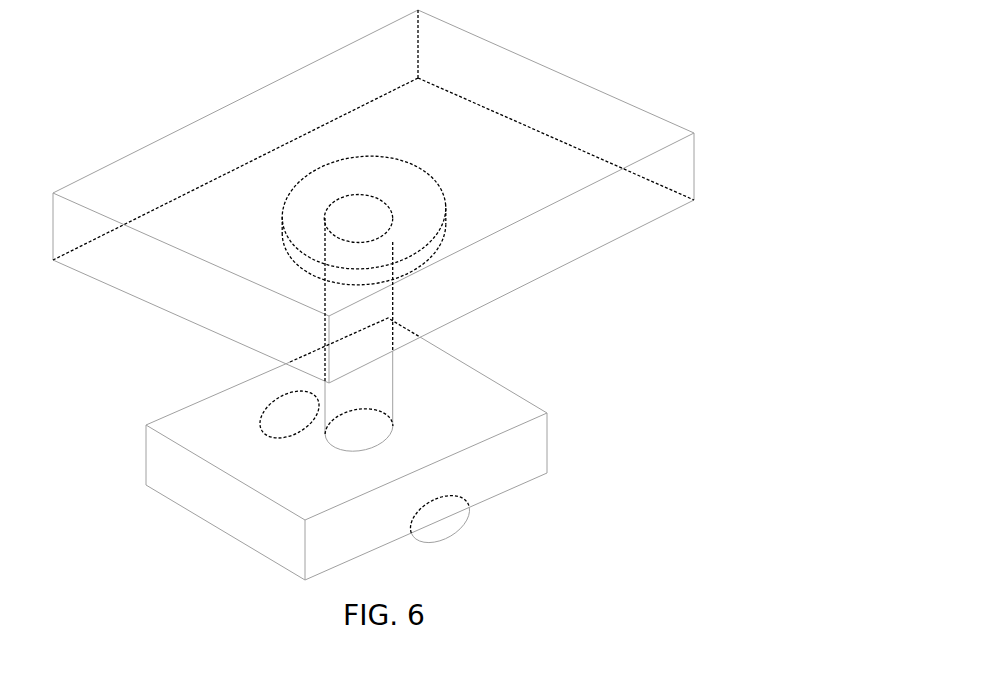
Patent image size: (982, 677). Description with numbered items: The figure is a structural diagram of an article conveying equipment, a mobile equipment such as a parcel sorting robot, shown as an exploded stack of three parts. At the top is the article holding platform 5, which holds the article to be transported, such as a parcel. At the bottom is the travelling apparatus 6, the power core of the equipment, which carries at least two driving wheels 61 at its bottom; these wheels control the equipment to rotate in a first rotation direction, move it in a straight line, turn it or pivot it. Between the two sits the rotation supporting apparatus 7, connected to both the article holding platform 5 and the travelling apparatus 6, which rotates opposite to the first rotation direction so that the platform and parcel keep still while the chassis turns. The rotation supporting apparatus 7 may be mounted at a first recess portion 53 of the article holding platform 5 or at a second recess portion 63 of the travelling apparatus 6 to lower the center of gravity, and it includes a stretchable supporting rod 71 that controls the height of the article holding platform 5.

The article holding platform 5 is at (573, 130).
The rotation supporting apparatus 7 is at (313, 213).
The first recess portion 53 is at (368, 212).
The stretchable supporting rod 71 is at (393, 382).
The travelling apparatus 6 is at (507, 415).
The driving wheels 61 is at (261, 419).
The second recess portion 63 is at (367, 432).